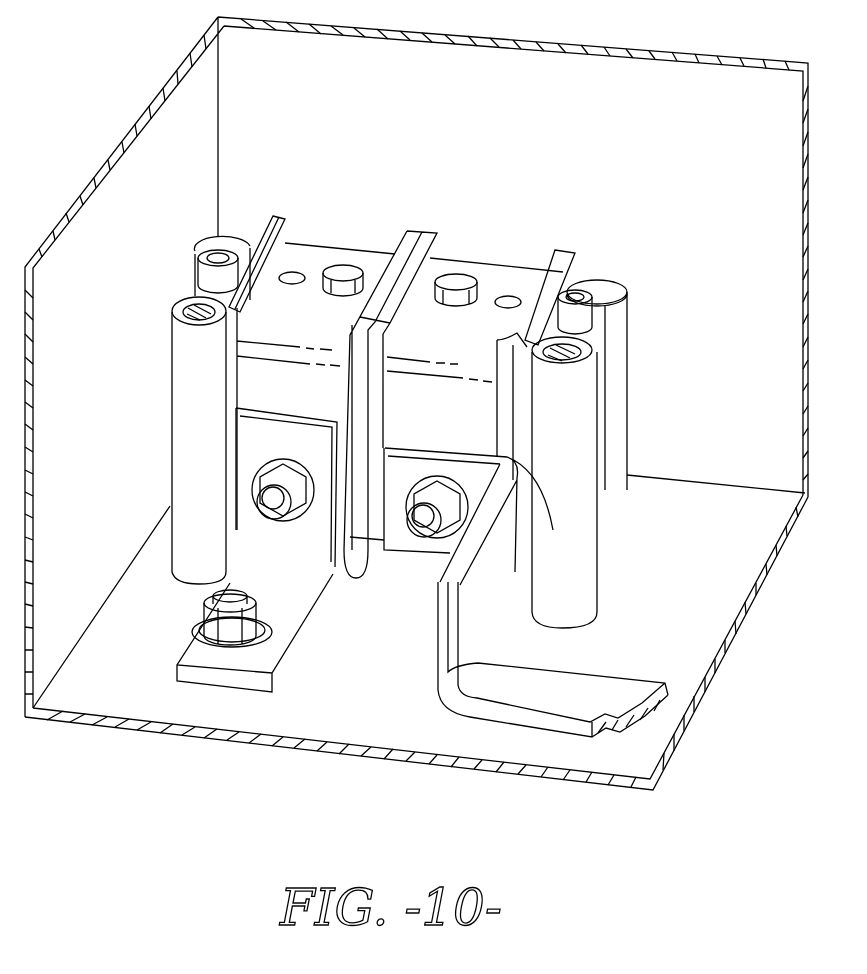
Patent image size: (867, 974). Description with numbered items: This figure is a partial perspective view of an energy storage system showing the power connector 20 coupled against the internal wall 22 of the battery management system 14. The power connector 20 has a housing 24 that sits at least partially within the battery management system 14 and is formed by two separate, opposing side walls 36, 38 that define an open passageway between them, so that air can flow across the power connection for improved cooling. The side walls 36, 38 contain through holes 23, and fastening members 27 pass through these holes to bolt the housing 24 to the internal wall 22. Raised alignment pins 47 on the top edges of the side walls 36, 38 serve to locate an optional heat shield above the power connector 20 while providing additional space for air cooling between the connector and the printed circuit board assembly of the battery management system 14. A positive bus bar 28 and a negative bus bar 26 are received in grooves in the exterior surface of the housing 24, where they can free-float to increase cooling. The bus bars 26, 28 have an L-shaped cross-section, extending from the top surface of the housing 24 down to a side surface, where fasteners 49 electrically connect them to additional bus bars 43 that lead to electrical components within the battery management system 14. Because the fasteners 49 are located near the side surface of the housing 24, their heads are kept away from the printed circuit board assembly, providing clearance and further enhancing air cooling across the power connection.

The battery management system 14 is at (178, 124).
The power connector 20 is at (603, 194).
The internal wall 22 is at (392, 651).
The through holes 23 is at (607, 290).
The housing 24 is at (417, 241).
The negative bus bar 26 is at (483, 350).
The fastening members 27 is at (598, 350).
The positive bus bar 28 is at (313, 322).
The side wall 36 is at (175, 306).
The side wall 38 is at (600, 330).
The additional bus bars 43 is at (193, 648).
The alignment pins 47 is at (213, 258).
The fasteners 49 is at (255, 503).